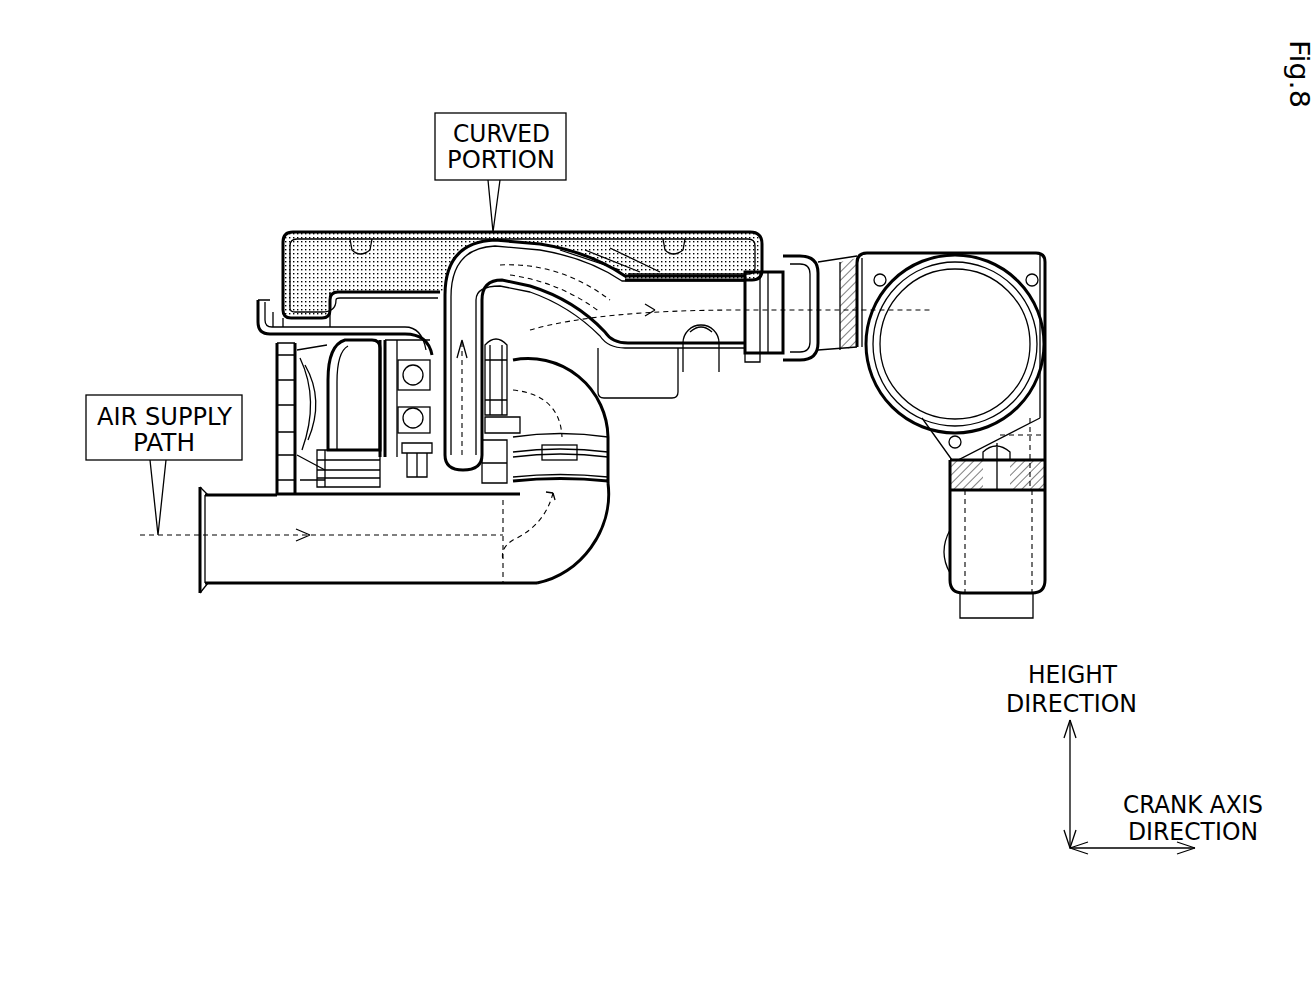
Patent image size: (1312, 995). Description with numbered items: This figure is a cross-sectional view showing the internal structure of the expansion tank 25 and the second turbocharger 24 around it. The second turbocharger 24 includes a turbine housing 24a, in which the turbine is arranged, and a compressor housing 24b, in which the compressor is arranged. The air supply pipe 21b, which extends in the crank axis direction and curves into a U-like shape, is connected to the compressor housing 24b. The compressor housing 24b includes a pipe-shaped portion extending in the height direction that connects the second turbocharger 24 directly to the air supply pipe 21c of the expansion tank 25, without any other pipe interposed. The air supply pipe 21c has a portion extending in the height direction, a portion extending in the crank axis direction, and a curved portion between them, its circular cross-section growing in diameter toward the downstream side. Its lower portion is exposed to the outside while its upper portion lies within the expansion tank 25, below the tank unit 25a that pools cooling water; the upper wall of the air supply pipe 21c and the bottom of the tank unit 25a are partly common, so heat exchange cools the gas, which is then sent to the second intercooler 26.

The air supply pipe 21b is at (230, 584).
The air supply pipe 21c is at (722, 345).
The second turbocharger 24 is at (443, 528).
The turbine housing 24a is at (356, 498).
The compressor housing 24b is at (470, 500).
The expansion tank 25 is at (747, 216).
The tank unit 25a is at (372, 231).
The second intercooler 26 is at (972, 250).